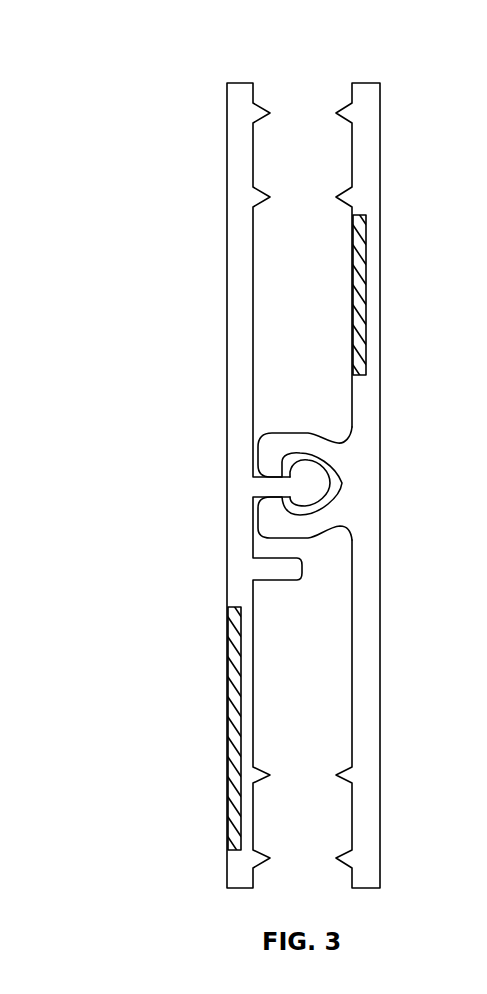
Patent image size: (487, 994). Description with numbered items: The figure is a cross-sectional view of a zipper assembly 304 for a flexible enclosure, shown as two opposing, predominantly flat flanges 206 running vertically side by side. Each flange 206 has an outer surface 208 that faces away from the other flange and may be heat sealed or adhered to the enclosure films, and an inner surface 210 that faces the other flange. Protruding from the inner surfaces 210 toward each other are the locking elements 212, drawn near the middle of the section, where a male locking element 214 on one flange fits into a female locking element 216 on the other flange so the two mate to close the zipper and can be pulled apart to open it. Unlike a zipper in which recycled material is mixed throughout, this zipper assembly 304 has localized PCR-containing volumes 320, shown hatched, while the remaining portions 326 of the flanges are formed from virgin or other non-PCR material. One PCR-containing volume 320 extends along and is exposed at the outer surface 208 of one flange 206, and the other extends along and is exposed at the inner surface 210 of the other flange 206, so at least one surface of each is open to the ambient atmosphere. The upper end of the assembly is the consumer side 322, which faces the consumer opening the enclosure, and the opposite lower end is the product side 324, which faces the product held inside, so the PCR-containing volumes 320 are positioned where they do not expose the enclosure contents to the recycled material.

The flange 206 is at (227, 258).
The outer surface 208 is at (222, 179).
The inner surface 210 is at (262, 172).
The locking element 212 is at (393, 433).
The male locking element 214 is at (303, 488).
The female locking element 216 is at (271, 448).
The zipper assembly 304 is at (125, 136).
The PCR-containing volume 320 is at (367, 317).
The consumer side 322 is at (295, 86).
The product side 324 is at (288, 898).
The non-PCR portion 326 is at (366, 155).